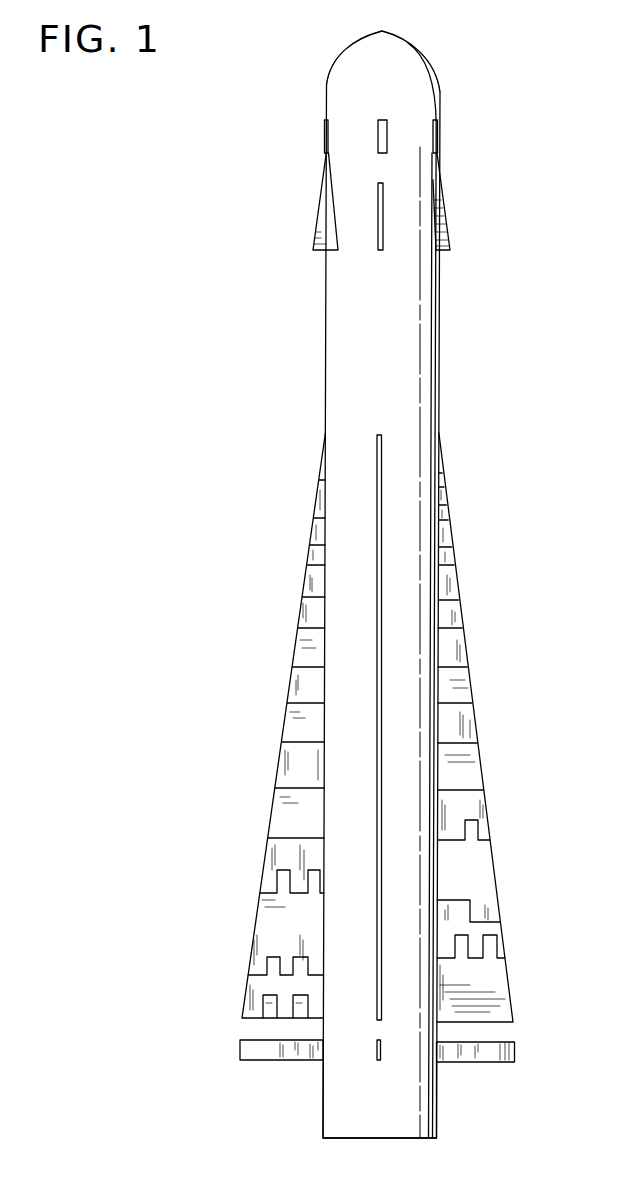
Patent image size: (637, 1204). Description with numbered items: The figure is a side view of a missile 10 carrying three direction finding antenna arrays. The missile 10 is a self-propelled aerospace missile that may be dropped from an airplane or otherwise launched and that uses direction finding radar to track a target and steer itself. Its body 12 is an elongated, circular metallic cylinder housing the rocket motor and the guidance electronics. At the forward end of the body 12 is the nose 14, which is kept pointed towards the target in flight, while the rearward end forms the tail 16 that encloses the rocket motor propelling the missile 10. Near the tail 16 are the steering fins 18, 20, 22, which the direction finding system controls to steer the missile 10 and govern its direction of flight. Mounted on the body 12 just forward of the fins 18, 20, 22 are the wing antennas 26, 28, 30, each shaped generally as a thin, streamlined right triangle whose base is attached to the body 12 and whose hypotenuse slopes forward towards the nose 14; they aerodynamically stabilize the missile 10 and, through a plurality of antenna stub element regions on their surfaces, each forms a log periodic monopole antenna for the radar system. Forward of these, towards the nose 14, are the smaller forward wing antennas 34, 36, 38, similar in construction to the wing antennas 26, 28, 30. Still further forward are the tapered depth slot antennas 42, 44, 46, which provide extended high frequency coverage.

The missile 10 is at (268, 482).
The body 12 is at (325, 356).
The nose 14 is at (325, 84).
The tail 16 is at (323, 1118).
The steering fin 18 is at (240, 1052).
The steering fin 20 is at (377, 1052).
The steering fin 22 is at (488, 1063).
The wing antenna 26 is at (276, 773).
The wing antenna 28 is at (377, 852).
The wing antenna 30 is at (481, 773).
The forward wing antenna 34 is at (320, 217).
The forward wing antenna 36 is at (378, 225).
The forward wing antenna 38 is at (448, 223).
The tapered depth slot antenna 42 is at (324, 130).
The tapered depth slot antenna 44 is at (383, 136).
The tapered depth slot antenna 46 is at (439, 137).